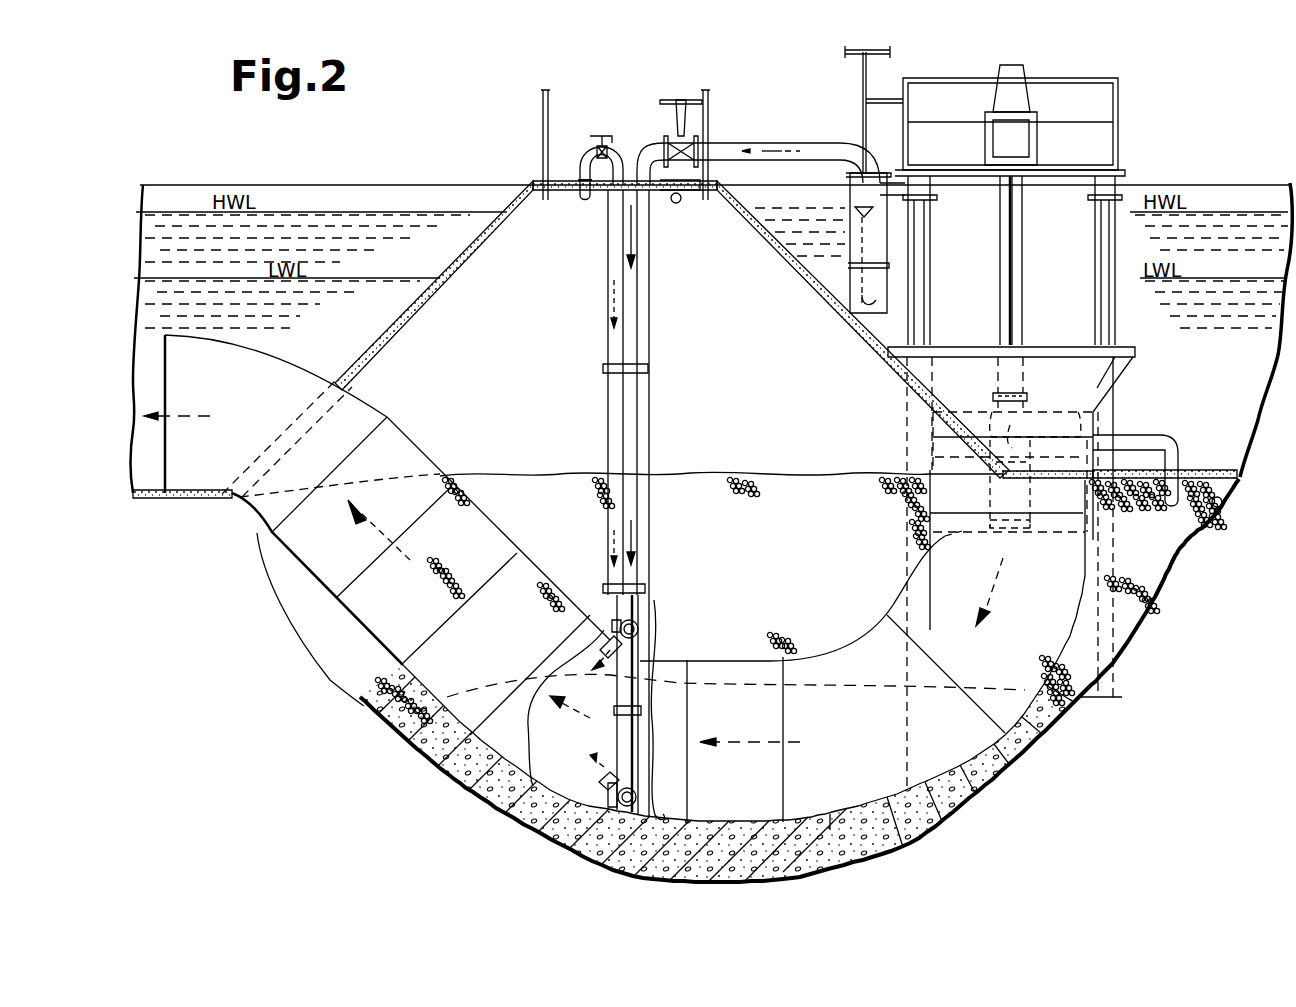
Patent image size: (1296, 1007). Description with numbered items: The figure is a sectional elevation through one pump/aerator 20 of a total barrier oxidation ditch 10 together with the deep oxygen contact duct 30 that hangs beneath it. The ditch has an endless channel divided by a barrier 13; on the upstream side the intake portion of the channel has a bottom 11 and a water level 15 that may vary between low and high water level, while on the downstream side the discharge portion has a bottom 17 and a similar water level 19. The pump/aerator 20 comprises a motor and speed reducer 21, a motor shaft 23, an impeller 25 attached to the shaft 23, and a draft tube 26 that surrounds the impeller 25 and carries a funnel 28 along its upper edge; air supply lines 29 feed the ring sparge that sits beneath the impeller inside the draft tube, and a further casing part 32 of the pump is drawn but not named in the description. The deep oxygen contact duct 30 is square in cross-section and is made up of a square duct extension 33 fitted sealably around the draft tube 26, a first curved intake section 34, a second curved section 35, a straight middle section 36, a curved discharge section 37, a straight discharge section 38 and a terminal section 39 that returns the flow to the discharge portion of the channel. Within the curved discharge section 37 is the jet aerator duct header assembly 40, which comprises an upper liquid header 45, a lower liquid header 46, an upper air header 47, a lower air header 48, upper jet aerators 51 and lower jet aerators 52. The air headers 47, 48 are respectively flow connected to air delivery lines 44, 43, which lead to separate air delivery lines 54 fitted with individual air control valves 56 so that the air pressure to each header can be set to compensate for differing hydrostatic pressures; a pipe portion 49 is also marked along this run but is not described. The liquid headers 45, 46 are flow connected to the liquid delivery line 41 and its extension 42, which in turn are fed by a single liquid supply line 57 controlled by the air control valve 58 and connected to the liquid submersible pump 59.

The total barrier oxidation ditch 10 is at (440, 158).
The bottom 11 is at (1233, 478).
The barrier 13 is at (537, 182).
The water level 15 is at (1214, 280).
The bottom 17 is at (152, 490).
The water level 19 is at (384, 278).
The pump/aerator 20 is at (1068, 133).
The motor and speed reducer 21 is at (1020, 100).
The motor shaft 23 is at (1023, 205).
The impeller 25 is at (1017, 422).
The draft tube 26 is at (960, 536).
The funnel 28 is at (1135, 360).
The air supply lines 29 is at (1170, 440).
The deep oxygen contact duct 30 is at (1070, 651).
The pump casing 32 is at (1092, 432).
The square duct extension 33 is at (922, 474).
The first curved intake section 34 is at (903, 611).
The second curved section 35 is at (842, 835).
The straight middle section 36 is at (757, 822).
The curved discharge section 37 is at (672, 826).
The straight discharge section 38 is at (472, 510).
The terminal section 39 is at (272, 347).
The jet aerator duct header assembly 40 is at (700, 644).
The liquid delivery line 41 is at (643, 297).
The extension 42 is at (633, 753).
The air delivery line 43 is at (617, 301).
The air delivery line 44 is at (623, 686).
The upper liquid lateral line or header 45 is at (640, 628).
The lower liquid lateral line or header 46 is at (638, 796).
The upper air lateral line or header 47 is at (612, 624).
The lower air lateral line or header 48 is at (592, 836).
The pipe portion 49 is at (607, 526).
The upper jet aerators 51 is at (604, 644).
The lower jet aerators 52 is at (605, 775).
The separate air delivery lines 54 is at (578, 195).
The individual air control valves 56 is at (598, 135).
The single liquid supply line 57 is at (786, 142).
The air control valve 58 is at (664, 100).
The liquid submersible pump 59 is at (822, 281).